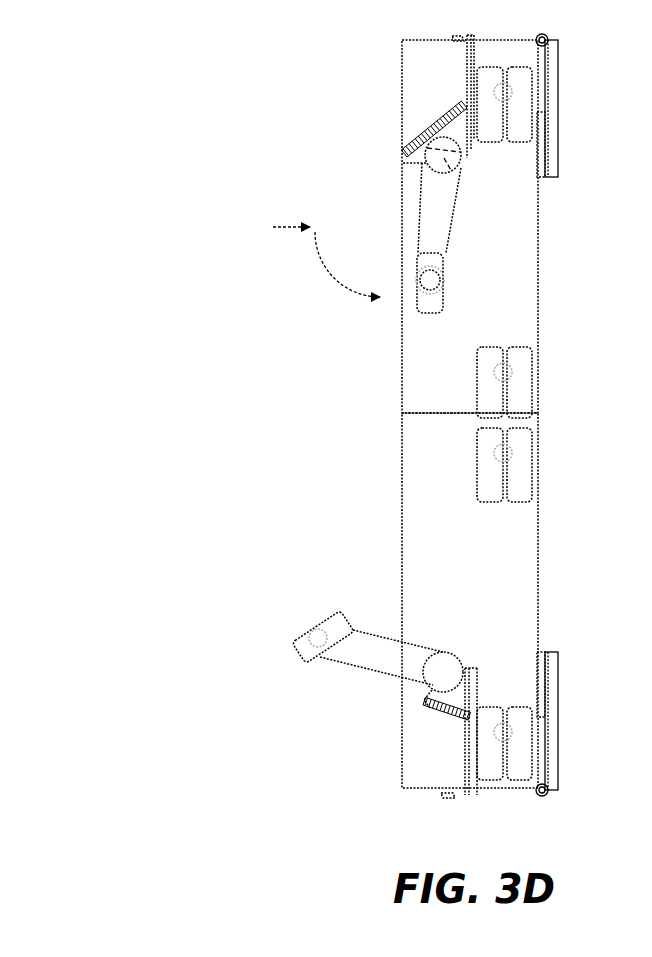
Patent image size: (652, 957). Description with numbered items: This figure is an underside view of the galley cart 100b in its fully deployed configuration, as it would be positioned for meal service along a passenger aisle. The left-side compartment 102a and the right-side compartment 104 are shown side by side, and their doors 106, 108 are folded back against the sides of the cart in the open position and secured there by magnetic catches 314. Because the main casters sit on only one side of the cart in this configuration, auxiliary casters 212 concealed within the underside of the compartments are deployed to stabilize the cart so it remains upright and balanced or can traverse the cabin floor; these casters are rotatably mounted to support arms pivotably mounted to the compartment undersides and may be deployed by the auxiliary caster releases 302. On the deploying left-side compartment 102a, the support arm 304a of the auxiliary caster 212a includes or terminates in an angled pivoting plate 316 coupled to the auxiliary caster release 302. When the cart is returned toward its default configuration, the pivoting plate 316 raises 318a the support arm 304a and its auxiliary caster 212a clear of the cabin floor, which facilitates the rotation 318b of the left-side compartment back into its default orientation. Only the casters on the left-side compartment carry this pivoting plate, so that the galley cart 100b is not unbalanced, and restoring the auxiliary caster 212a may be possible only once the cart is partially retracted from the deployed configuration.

The galley cart 100b is at (185, 92).
The left-side compartment 102a is at (498, 275).
The right-side compartment 104 is at (495, 570).
The door 106 is at (552, 80).
The door 108 is at (550, 760).
The magnetic catch 314 is at (542, 147).
The auxiliary caster release 302 is at (453, 37).
The angled pivoting plate 316 is at (433, 150).
The support arm 304a is at (432, 227).
The auxiliary caster 212a is at (425, 300).
The auxiliary caster 212 is at (305, 650).
The raising of the support arm 318a is at (297, 222).
The rotation of the left-side compartment 318b is at (332, 278).